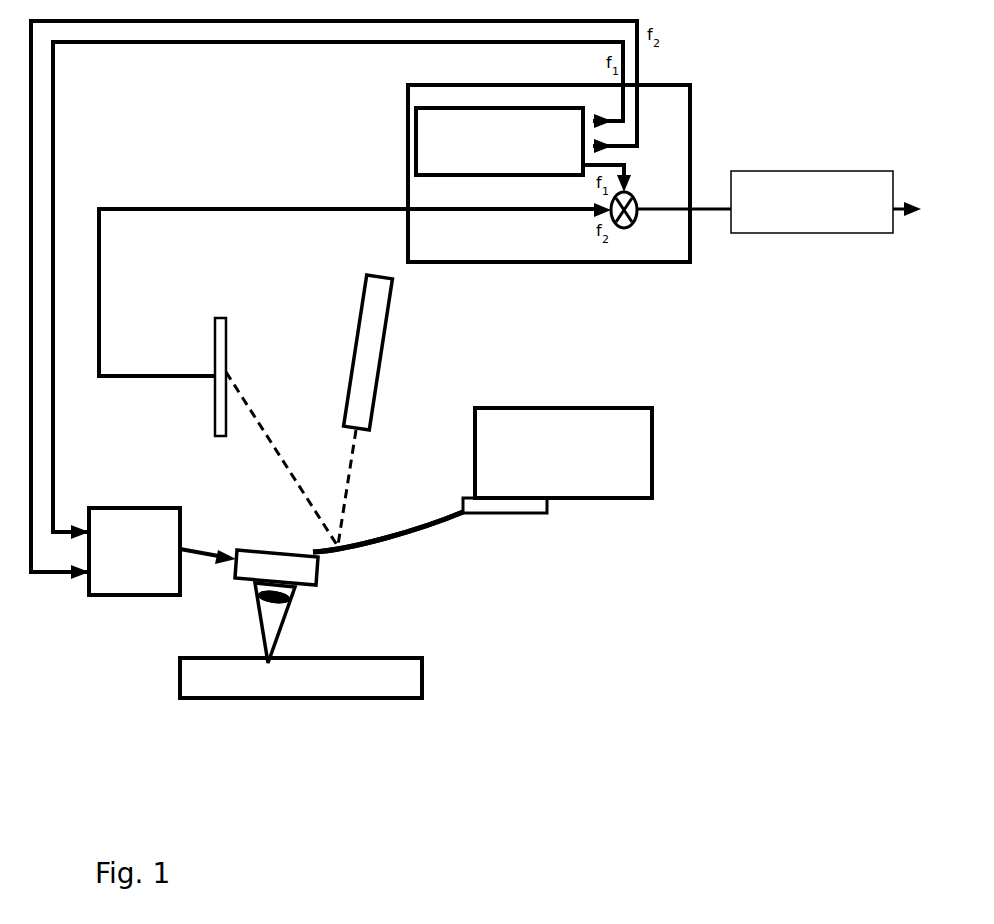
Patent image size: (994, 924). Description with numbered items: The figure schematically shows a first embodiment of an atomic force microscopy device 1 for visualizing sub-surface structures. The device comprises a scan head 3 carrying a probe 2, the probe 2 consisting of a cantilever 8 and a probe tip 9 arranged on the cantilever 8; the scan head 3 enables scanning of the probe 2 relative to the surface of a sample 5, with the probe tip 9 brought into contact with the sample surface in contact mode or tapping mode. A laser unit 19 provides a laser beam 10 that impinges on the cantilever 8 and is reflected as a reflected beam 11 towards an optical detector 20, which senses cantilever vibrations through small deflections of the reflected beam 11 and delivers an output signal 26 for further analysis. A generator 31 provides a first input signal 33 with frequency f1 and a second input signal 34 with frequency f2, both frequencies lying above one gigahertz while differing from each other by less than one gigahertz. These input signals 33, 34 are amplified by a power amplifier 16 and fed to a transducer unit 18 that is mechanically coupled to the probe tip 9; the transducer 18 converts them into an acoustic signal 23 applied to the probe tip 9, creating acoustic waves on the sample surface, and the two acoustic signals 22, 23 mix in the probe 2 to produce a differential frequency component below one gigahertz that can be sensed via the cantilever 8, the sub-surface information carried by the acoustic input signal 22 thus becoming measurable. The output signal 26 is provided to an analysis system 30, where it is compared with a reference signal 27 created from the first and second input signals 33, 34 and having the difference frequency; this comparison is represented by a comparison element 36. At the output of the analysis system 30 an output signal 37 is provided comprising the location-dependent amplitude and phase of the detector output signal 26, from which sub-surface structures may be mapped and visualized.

The scanning probe microscopy system 1 is at (702, 606).
The probe 2 is at (404, 528).
The scan head 3 is at (652, 450).
The sample 5 is at (422, 660).
The cantilever 8 is at (445, 532).
The probe tip 9 is at (257, 632).
The laser beam 10 is at (347, 485).
The reflected beam 11 is at (264, 422).
The power amplifier 16 is at (128, 505).
The transducer unit 18 is at (262, 550).
The laser unit 19 is at (383, 340).
The optical detector 20 is at (226, 322).
The acoustic signal 22 is at (290, 627).
The acoustic signal 23 is at (273, 597).
The output signal 26 is at (160, 372).
The reference signal 27 is at (627, 164).
The analysis system 30 is at (648, 264).
The generator 31 is at (445, 103).
The first input signal 33 is at (605, 44).
The second input signal 34 is at (640, 63).
The comparison element 36 is at (614, 230).
The output signal 37 is at (781, 238).